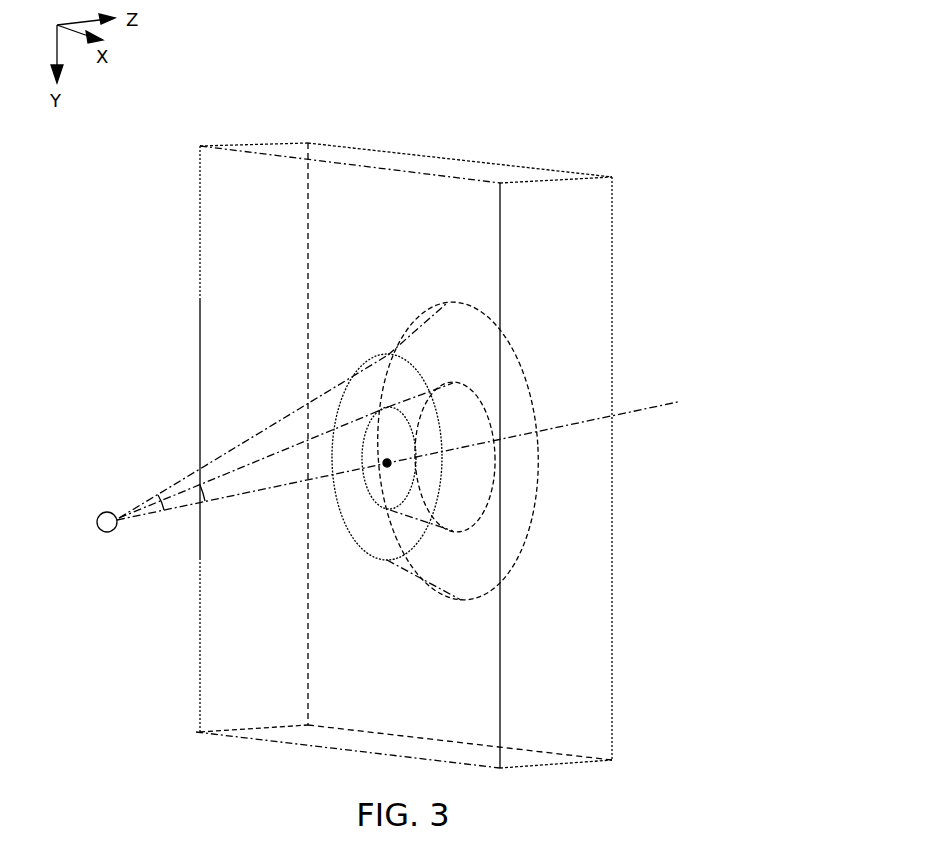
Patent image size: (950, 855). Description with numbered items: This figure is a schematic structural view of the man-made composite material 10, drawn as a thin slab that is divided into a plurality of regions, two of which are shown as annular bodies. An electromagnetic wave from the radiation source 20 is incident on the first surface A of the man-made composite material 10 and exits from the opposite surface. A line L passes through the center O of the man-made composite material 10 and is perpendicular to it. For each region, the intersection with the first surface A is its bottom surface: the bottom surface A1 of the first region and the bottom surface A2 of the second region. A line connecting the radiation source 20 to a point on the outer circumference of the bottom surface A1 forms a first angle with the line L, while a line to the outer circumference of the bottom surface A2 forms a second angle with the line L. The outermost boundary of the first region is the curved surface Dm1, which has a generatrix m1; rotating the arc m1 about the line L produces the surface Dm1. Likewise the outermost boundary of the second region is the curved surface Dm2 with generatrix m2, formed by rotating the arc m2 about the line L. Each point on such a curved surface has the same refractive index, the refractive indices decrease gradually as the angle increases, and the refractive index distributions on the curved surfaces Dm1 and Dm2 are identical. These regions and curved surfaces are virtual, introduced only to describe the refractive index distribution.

The man-made composite material 10 is at (537, 167).
The radiation source 20 is at (93, 522).
The first surface A is at (218, 188).
The bottom surface of the first region A1 is at (377, 485).
The bottom surface of the second region A2 is at (377, 532).
The generatrix of curved surface Dm1 m1 is at (437, 383).
The generatrix of curved surface Dm2 m2 is at (397, 330).
The curved surface of the outermost boundary of the first region Dm1 is at (462, 423).
The curved surface of the outermost boundary of the second region Dm2 is at (472, 323).
The center of the man-made composite material O is at (382, 455).
The line perpendicular to the man-made composite material L is at (414, 453).